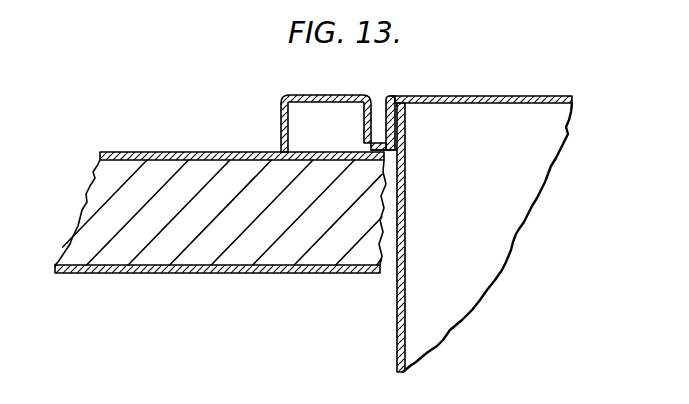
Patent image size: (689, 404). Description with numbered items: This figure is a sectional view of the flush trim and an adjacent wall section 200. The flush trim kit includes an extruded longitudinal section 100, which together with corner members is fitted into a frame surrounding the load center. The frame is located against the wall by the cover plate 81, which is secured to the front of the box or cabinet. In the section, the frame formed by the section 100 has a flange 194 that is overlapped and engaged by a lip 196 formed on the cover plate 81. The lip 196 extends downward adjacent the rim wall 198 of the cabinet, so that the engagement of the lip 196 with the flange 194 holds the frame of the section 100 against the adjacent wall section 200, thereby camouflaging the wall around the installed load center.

The cover plate 81 is at (450, 96).
The extruded longitudinal section 100 is at (342, 95).
The flange 194 is at (390, 151).
The lip 196 is at (375, 110).
The rim wall 198 is at (405, 234).
The wall section 200 is at (197, 135).